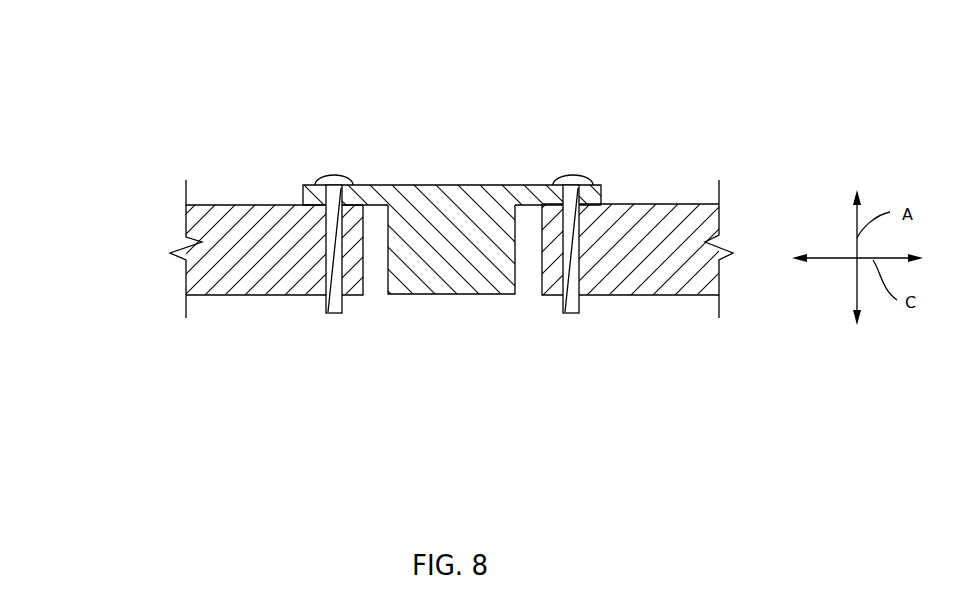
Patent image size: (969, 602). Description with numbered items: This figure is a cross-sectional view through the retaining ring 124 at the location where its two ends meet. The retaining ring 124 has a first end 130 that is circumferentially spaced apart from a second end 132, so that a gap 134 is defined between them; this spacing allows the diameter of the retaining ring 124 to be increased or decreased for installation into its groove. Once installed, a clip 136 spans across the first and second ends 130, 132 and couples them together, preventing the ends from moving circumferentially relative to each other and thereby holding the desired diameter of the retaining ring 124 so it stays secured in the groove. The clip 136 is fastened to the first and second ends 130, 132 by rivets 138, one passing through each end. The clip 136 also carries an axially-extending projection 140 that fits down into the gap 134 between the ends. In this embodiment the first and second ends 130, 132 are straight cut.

The retaining ring 124 is at (129, 112).
The first end 130 is at (258, 296).
The second end 132 is at (672, 296).
The gap 134 is at (524, 302).
The clip 136 is at (463, 180).
The rivets 138 is at (330, 314).
The axially-extending projection 140 is at (440, 296).